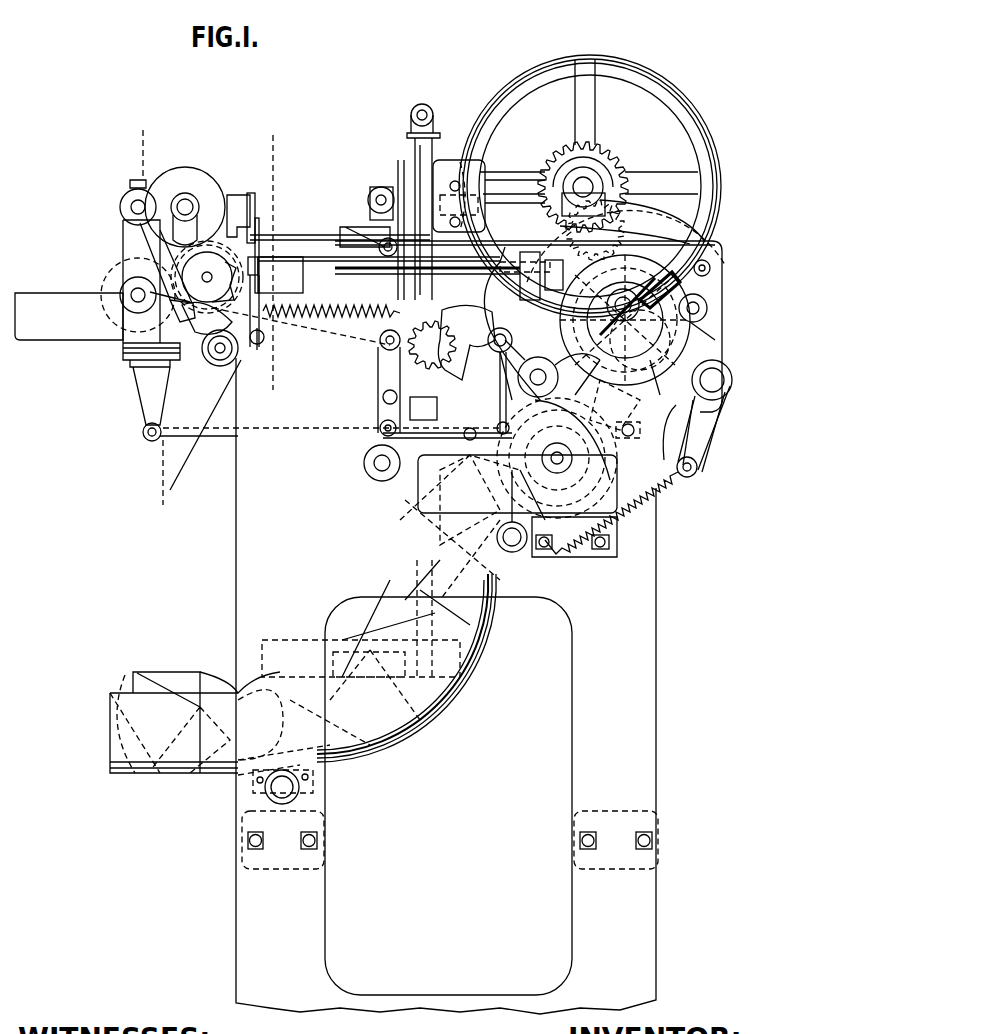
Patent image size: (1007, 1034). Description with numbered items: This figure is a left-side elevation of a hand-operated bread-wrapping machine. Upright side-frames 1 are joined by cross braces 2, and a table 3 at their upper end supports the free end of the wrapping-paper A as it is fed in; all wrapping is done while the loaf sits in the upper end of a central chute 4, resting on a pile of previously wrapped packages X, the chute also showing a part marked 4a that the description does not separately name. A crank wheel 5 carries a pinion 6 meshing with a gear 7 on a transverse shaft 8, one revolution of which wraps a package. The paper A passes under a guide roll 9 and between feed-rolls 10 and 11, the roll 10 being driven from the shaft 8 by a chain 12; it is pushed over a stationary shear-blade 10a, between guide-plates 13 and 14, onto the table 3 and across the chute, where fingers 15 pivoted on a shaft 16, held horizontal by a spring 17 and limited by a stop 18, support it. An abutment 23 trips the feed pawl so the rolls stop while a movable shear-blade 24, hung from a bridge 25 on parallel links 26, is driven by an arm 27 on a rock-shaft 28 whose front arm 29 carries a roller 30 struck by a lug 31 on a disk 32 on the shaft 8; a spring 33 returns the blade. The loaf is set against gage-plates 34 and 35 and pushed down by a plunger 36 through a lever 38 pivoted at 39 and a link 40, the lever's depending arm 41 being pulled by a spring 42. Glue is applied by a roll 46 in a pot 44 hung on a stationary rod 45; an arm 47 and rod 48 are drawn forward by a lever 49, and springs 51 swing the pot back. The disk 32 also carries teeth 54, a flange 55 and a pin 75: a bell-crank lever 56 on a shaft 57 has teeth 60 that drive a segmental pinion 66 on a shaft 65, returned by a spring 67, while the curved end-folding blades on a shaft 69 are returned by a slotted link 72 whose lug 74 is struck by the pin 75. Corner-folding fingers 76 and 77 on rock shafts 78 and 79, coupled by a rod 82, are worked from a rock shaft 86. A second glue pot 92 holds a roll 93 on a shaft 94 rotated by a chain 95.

The side-frames 1 is at (446, 686).
The cross braces 2 is at (275, 870).
The table 3 is at (718, 243).
The chute 4 is at (476, 632).
The guide rail 4a is at (398, 715).
The crank wheel 5 is at (700, 128).
The pinion 6 is at (610, 172).
The gear 7 is at (628, 245).
The transverse shaft 8 is at (690, 330).
The guide roll 9 is at (216, 367).
The feed-roll 10 is at (219, 310).
The stationary shear-blade 10a is at (207, 277).
The feed-roll 11 is at (212, 182).
The chain 12 is at (330, 337).
The guide-plate 13 is at (300, 255).
The guide-plate 14 is at (285, 232).
The fingers 15 is at (495, 245).
The shaft 16 is at (381, 203).
The spring 17 is at (368, 228).
The stop 18 is at (380, 242).
The abutment 23 is at (680, 350).
The movable shear-blade 24 is at (251, 192).
The bridge 25 is at (236, 195).
The parallel links 26 is at (258, 217).
The arm 27 is at (266, 256).
The rock-shaft 28 is at (320, 309).
The arm 29 is at (567, 255).
The roller 30 is at (534, 270).
The lug 31 is at (712, 272).
The disk 32 is at (700, 420).
The spring 33 is at (252, 350).
The back gage-plate 34 is at (398, 165).
The side gage-plate 35 is at (486, 172).
The plunger 36 is at (420, 170).
The lever 38 is at (472, 278).
The pivot 39 is at (722, 384).
The link 40 is at (380, 345).
The depending arm 41 is at (696, 428).
The spring 42 is at (686, 478).
The glue pot 44 is at (69, 316).
The stationary rod 45 is at (133, 205).
The glue roll 46 is at (112, 285).
The arm 47 is at (135, 400).
The rod 48 is at (218, 440).
The lever 49 is at (630, 415).
The springs 51 is at (122, 210).
The gear teeth 54 is at (560, 385).
The flange 55 is at (708, 440).
The bell-crank lever 56 is at (490, 352).
The shaft 57 is at (493, 376).
The teeth 60 is at (450, 330).
The shaft 65 is at (378, 370).
The segmental pinion 66 is at (382, 397).
The spring 67 is at (295, 338).
The shaft 69 is at (612, 438).
The slotted link 72 is at (708, 308).
The lug 74 is at (652, 268).
The pin 75 is at (675, 268).
The finger 76 is at (500, 400).
The finger 77 is at (380, 428).
The rock shaft 78 is at (460, 527).
The rock shaft 79 is at (364, 460).
The rod 82 is at (450, 430).
The rock shaft 86 is at (716, 340).
The glue pot 92 is at (435, 629).
The roll 93 is at (620, 415).
The shaft 94 is at (545, 470).
The chain 95 is at (636, 432).
The wrapping-paper A is at (190, 455).
The packages X is at (165, 680).